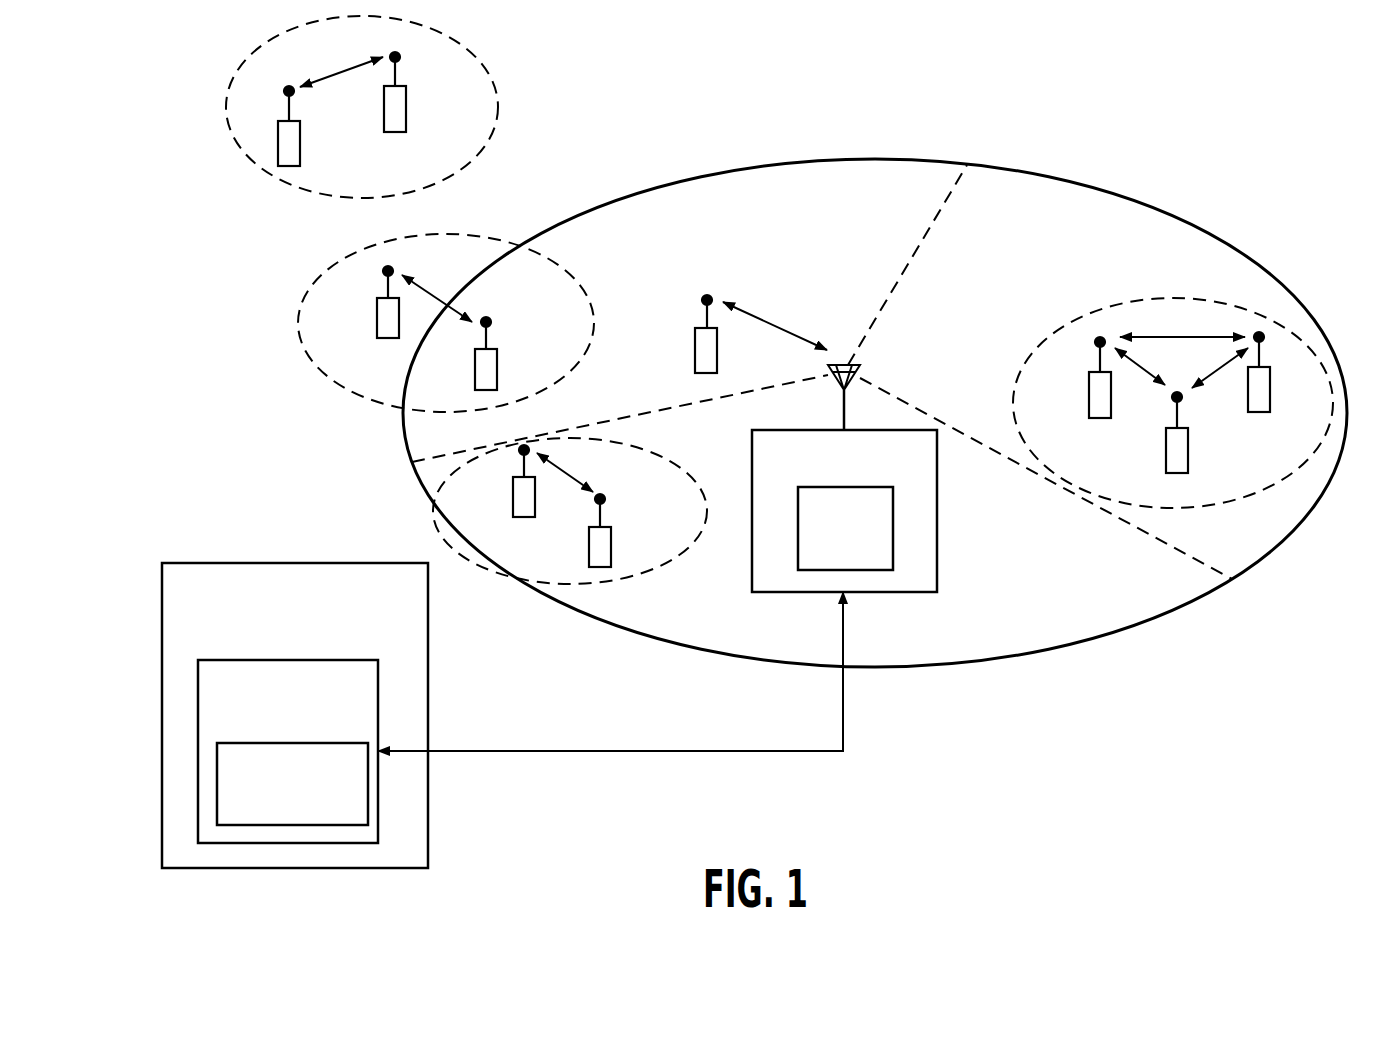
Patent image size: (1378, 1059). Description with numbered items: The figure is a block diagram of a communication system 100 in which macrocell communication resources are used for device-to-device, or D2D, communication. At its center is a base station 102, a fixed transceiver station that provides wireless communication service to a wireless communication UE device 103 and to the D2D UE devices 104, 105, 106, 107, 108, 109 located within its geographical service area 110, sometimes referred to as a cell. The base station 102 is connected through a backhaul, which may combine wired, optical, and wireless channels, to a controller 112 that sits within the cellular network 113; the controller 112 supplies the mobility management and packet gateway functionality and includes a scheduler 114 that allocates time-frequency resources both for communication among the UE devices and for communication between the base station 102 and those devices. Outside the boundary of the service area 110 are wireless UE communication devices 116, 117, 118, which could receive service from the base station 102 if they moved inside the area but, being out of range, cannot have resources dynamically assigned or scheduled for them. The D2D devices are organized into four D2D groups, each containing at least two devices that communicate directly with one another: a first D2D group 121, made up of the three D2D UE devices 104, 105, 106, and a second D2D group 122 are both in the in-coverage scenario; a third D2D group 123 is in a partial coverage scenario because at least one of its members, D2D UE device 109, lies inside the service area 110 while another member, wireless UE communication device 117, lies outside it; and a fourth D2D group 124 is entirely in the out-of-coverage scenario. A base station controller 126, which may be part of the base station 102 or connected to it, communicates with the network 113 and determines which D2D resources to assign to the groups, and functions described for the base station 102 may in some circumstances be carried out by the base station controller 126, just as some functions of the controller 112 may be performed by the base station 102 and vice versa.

The communication system 100 is at (1018, 739).
The base station 102 is at (903, 592).
The wireless communication UE device 103 is at (719, 352).
The D2D UE device 104 is at (1102, 420).
The D2D UE device 105 is at (1263, 413).
The D2D UE device 106 is at (1188, 448).
The D2D UE device 107 is at (612, 548).
The D2D UE device 108 is at (527, 519).
The D2D UE device 109 is at (497, 368).
The geographical service area 110 is at (1082, 180).
The controller 112 is at (271, 725).
The cellular network 113 is at (277, 627).
The scheduler 114 is at (275, 811).
The wireless UE communication device 116 is at (302, 143).
The wireless UE communication device 117 is at (392, 338).
The wireless UE communication device 118 is at (408, 107).
The first D2D group 121 is at (1287, 330).
The second D2D group 122 is at (440, 488).
The third D2D group 123 is at (562, 267).
The fourth D2D group 124 is at (485, 67).
The base station controller 126 is at (828, 553).